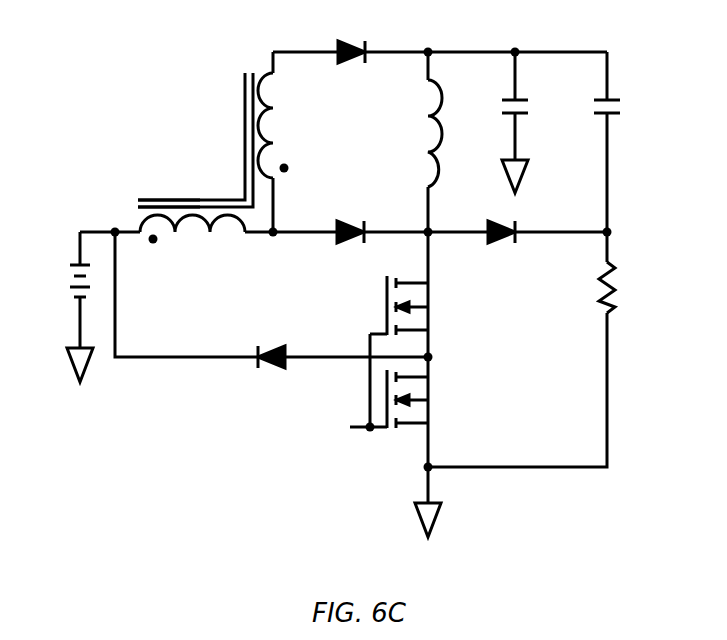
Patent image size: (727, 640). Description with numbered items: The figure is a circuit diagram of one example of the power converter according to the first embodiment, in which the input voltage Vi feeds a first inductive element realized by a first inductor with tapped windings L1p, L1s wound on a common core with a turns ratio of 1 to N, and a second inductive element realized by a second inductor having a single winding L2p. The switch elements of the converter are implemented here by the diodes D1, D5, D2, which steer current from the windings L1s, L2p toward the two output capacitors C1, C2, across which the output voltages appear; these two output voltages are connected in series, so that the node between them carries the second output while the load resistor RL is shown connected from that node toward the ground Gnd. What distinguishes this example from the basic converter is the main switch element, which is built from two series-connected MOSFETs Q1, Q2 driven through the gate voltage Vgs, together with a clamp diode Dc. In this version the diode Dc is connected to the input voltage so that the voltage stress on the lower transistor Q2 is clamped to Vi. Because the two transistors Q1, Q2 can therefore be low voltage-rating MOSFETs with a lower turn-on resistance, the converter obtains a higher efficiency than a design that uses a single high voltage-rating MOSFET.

The turns ratio N is at (195, 140).
The turns ratio 1 is at (172, 184).
The tapped winding L1s is at (288, 125).
The single winding L2p is at (406, 133).
The tapped winding L1p is at (192, 248).
The diode D1 is at (348, 72).
The diode D5 is at (348, 247).
The diode D2 is at (498, 249).
The diode Dc is at (269, 339).
The first capacitor C1 is at (494, 122).
The output capacitor C2 is at (586, 109).
The input voltage Vi is at (65, 307).
The MOSFET Q1 is at (423, 305).
The MOSFET Q2 is at (423, 399).
The gate drive voltage Vgs is at (329, 426).
The load resistor RL is at (580, 290).
The ground Gnd is at (643, 359).